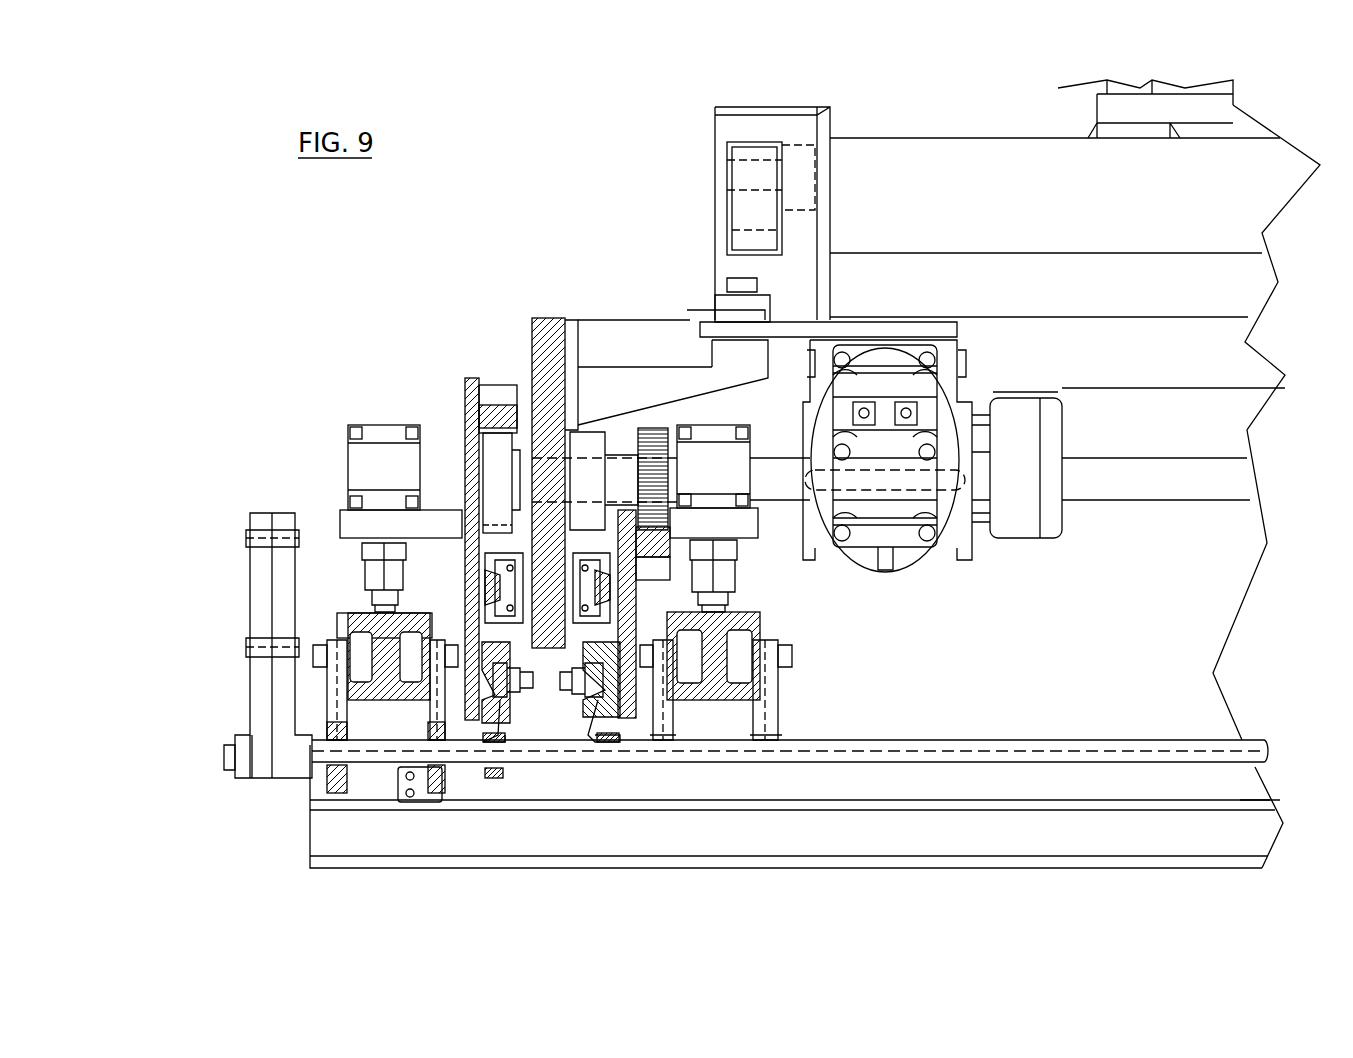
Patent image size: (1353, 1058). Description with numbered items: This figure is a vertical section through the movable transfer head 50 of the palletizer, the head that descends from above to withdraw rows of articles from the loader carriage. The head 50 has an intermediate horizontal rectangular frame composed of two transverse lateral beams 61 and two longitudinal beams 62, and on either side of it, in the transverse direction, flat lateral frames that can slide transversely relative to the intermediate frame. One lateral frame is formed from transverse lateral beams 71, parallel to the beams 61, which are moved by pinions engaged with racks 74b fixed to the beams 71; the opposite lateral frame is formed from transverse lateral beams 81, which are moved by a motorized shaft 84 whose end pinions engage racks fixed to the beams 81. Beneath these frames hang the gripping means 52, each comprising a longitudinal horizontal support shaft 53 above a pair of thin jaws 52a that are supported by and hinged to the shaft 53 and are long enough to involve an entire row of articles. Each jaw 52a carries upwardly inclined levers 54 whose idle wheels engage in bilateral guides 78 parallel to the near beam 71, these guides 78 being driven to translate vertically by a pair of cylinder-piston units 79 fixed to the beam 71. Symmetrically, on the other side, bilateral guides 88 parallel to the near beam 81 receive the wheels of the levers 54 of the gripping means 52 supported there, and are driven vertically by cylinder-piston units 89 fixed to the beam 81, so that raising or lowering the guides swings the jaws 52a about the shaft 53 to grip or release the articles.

The transfer head 50 is at (455, 316).
The gripping means 52 is at (302, 850).
The jaws 52a is at (1262, 792).
The support shaft 53 is at (1003, 740).
The levers 54 is at (672, 705).
The transverse lateral beams 61 is at (248, 568).
The longitudinal beams 62 is at (1118, 395).
The transverse lateral beams 71 is at (473, 397).
The racks 74b is at (496, 405).
The bilateral guides 78 is at (348, 625).
The cylinder-piston units 79 is at (358, 470).
The transverse lateral beams 81 is at (628, 508).
The motorized shaft 84 is at (1172, 500).
The bilateral guides 88 is at (760, 618).
The cylinder-piston units 89 is at (707, 432).